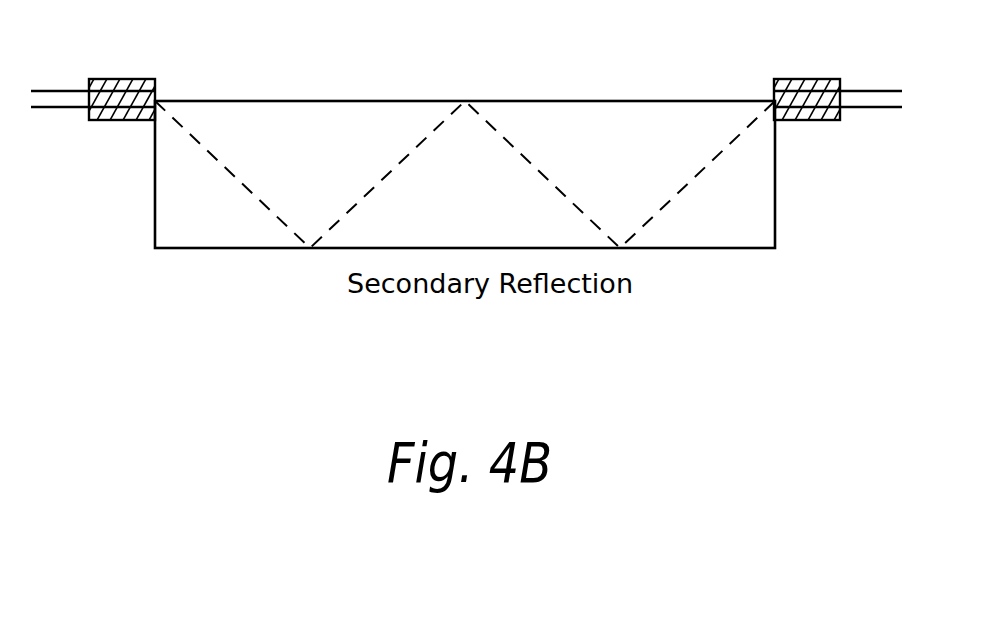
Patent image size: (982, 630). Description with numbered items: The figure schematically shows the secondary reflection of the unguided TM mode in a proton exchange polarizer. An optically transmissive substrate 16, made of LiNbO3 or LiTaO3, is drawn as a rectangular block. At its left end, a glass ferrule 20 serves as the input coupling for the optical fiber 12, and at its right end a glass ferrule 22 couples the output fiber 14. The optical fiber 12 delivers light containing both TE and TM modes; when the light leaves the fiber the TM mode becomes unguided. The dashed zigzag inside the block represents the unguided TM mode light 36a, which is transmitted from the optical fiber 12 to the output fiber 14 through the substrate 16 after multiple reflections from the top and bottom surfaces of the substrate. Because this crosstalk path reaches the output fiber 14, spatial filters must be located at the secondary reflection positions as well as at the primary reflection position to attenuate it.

The optical fiber 12 is at (68, 100).
The output fiber 14 is at (853, 103).
The optically transmissive substrate 16 is at (760, 219).
The glass ferrule 20 is at (127, 80).
The glass ferrule 22 is at (810, 80).
The unguided TM mode light 36a is at (236, 178).